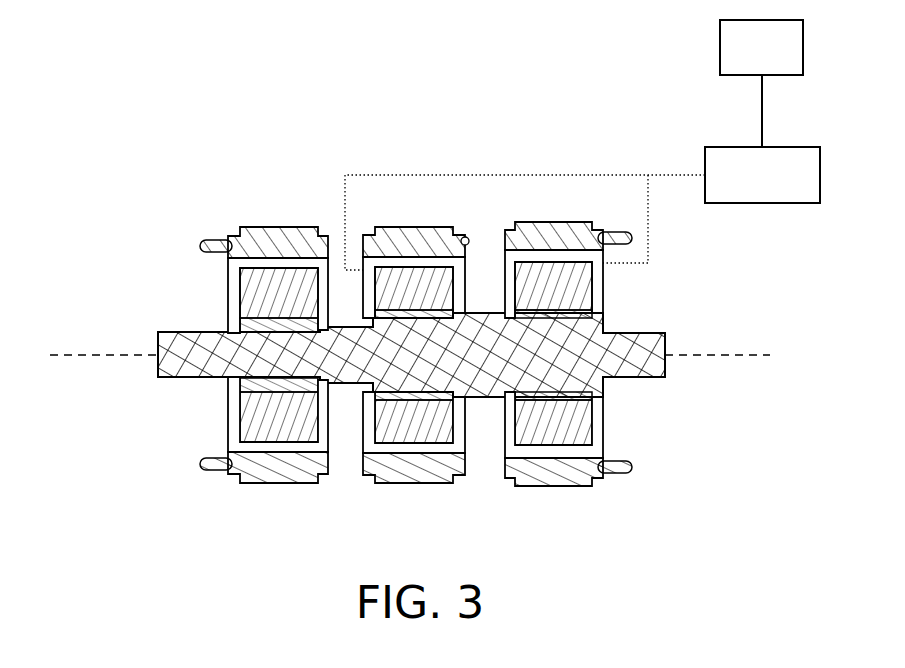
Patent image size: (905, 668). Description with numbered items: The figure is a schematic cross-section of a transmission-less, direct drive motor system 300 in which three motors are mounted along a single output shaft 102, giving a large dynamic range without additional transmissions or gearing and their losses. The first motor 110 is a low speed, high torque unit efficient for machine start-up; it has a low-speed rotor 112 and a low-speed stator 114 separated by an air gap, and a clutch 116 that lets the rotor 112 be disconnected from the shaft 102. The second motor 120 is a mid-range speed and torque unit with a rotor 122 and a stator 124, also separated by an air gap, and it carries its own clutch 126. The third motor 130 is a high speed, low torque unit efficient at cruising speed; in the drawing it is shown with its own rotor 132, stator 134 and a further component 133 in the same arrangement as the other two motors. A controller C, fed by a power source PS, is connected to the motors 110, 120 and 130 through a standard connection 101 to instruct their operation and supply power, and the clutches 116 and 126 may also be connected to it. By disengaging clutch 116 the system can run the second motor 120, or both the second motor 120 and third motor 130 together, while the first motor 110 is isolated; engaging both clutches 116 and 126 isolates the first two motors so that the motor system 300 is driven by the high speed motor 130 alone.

The motor system 300 is at (108, 152).
The connection 101 is at (630, 172).
The output shaft 102 is at (158, 332).
The first motor 110 is at (277, 160).
The low-speed rotor 112 is at (247, 280).
The low-speed stator 114 is at (230, 472).
The clutch 116 is at (230, 385).
The second motor 120 is at (416, 158).
The rotor 122 is at (410, 270).
The stator 124 is at (395, 478).
The clutch 126 is at (455, 398).
The third motor 130 is at (553, 158).
The third stator coil 132 is at (583, 282).
The third rotor 133 is at (585, 450).
The third stator 134 is at (593, 486).